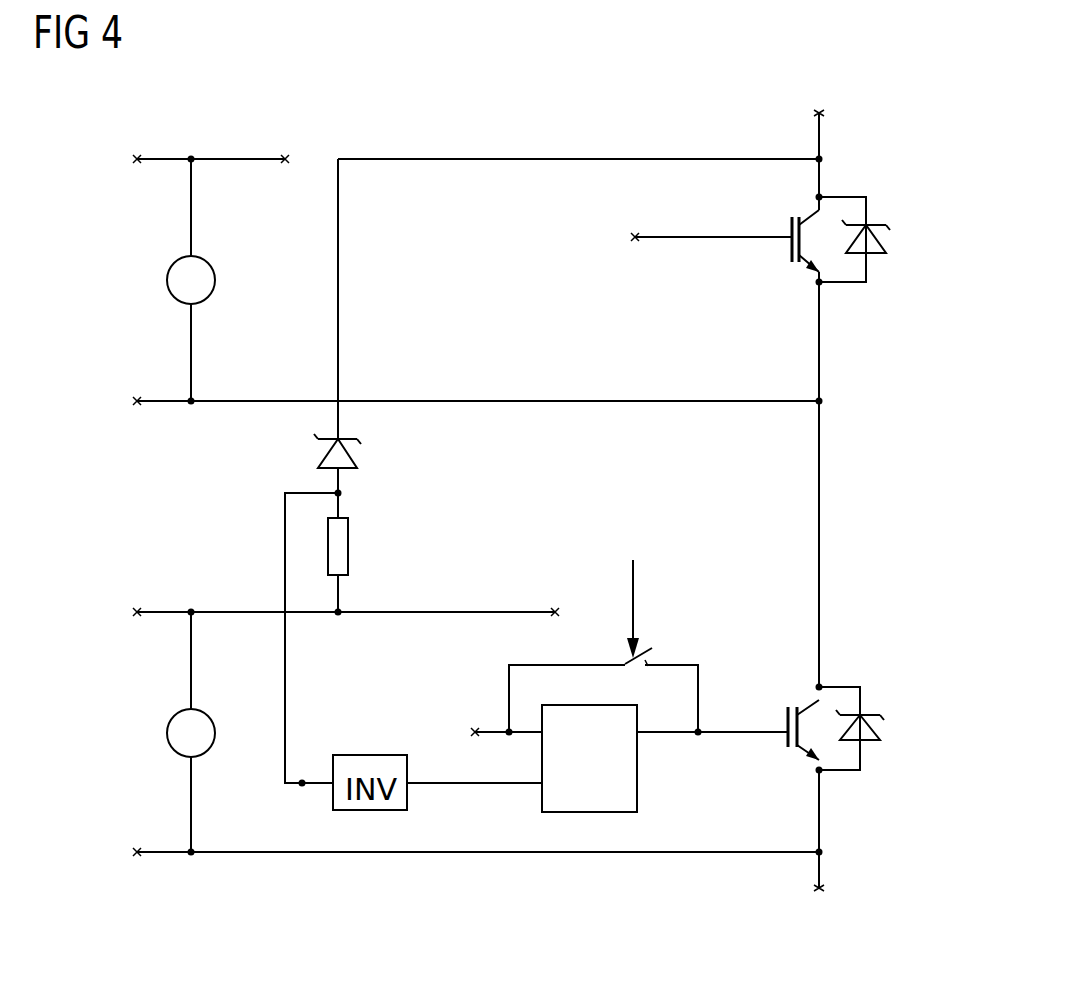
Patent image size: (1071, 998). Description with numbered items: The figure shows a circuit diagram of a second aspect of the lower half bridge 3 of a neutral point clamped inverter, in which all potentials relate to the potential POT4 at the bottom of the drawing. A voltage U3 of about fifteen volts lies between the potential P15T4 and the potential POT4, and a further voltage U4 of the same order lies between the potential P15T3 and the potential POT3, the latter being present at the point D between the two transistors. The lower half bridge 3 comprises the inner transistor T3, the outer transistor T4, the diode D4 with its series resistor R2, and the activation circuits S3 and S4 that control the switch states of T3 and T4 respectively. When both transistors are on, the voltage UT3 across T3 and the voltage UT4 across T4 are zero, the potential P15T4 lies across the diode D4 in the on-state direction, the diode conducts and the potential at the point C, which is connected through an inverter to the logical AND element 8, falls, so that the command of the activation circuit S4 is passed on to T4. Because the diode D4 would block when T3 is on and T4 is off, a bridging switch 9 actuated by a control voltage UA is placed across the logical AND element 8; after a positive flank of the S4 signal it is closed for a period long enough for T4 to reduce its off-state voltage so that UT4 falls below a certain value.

The potential P15T3 is at (166, 156).
The voltage U3 is at (143, 308).
The potential POT3 is at (160, 404).
The lower half bridge 3 is at (112, 489).
The potential P15T4 is at (166, 609).
The voltage U4 is at (142, 707).
The potential POT4 is at (160, 855).
The diode D4 is at (352, 450).
The resistor R2 is at (348, 548).
The point C is at (303, 782).
The logical AND element 8 is at (637, 773).
The activation circuit S4 is at (490, 731).
The bridging switch 9 is at (626, 657).
The control voltage UA is at (634, 594).
The activation circuit S3 is at (657, 241).
The inner transistor T3 is at (870, 244).
The voltage across the inner transistor UT3 is at (915, 210).
The point D is at (823, 510).
The outer transistor T4 is at (866, 732).
The voltage across the outer transistor UT4 is at (910, 703).